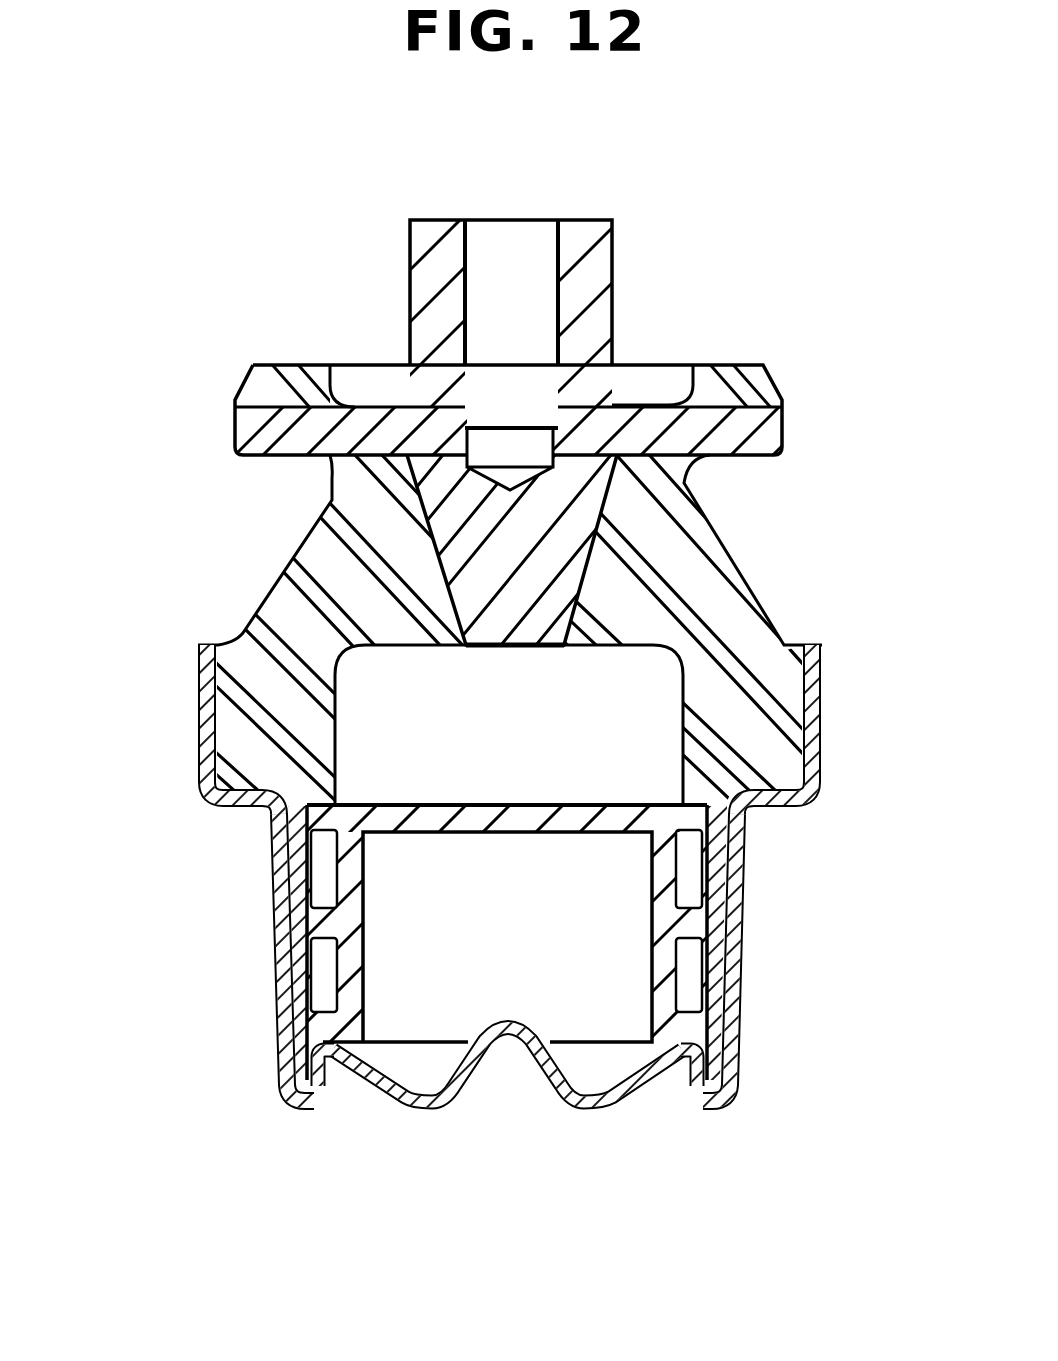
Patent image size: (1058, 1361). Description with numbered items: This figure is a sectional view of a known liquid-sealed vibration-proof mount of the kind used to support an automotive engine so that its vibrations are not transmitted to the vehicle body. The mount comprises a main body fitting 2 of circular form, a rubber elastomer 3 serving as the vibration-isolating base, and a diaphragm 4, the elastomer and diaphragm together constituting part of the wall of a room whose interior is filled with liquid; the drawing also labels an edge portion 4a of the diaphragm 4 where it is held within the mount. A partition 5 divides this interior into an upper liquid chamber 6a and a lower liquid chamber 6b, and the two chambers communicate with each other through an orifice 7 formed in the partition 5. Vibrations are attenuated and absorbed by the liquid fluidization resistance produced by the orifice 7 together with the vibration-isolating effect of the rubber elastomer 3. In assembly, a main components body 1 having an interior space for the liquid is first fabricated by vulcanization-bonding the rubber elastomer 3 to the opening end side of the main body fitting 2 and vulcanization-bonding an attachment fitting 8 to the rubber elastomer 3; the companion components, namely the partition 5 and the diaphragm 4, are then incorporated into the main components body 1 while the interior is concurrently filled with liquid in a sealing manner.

The main components body 1 is at (834, 730).
The main body fitting 2 is at (740, 940).
The rubber elastomer 3 is at (663, 583).
The diaphragm 4 is at (568, 1083).
The bent edge of bottom plate 4a is at (737, 1060).
The partition 5 is at (717, 880).
The upper liquid chamber 6a is at (368, 718).
The lower liquid chamber 6b is at (390, 920).
The orifice 7 is at (690, 857).
The attachment fitting 8 is at (608, 249).